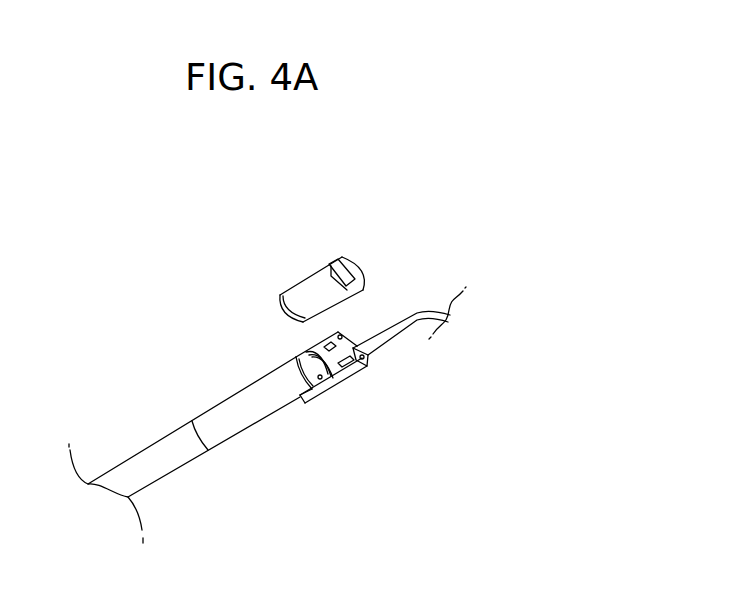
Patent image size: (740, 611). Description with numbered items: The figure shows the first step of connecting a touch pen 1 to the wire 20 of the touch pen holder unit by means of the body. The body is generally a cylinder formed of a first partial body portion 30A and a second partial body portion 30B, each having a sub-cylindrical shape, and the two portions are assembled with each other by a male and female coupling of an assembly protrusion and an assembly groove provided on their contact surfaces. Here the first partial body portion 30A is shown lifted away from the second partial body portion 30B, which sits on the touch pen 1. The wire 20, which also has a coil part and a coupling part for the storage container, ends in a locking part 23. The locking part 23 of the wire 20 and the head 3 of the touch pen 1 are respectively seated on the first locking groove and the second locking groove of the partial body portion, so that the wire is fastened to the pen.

The touch pen 1 is at (213, 420).
The head 3 is at (313, 353).
The wire 20 is at (409, 309).
The locking part 23 is at (362, 352).
The first partial body portion 30A is at (305, 285).
The second partial body portion 30B is at (345, 377).